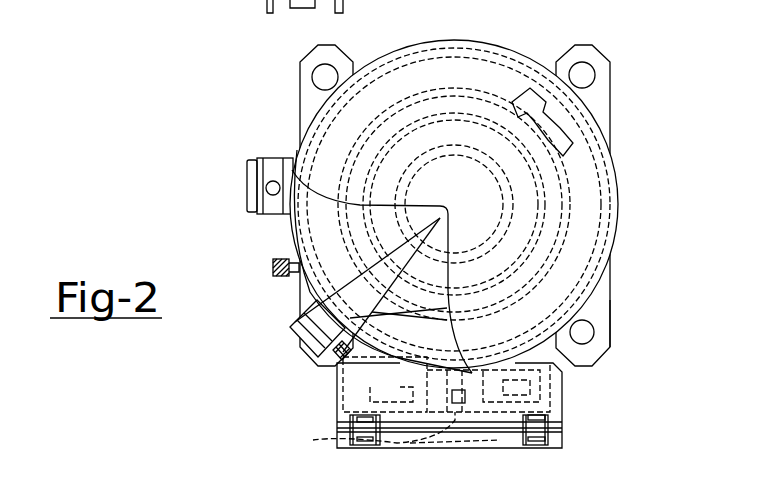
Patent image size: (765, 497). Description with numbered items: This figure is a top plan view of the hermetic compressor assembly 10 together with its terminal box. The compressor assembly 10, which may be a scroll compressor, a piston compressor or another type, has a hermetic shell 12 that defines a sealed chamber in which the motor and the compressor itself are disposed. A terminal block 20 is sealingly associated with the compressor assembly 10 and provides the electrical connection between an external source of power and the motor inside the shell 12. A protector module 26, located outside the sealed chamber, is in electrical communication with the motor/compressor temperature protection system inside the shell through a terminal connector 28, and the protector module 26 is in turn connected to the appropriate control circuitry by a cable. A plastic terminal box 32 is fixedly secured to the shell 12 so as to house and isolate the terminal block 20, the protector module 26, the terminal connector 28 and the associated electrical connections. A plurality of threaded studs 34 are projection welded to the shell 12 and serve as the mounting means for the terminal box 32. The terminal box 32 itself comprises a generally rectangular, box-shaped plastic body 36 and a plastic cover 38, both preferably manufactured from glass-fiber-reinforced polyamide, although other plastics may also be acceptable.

The hermetic compressor assembly 10 is at (216, 104).
The hermetic shell 12 is at (450, 41).
The terminal block 20 is at (608, 357).
The protector module 26 is at (345, 378).
The terminal connector 28 is at (288, 339).
The terminal box 32 is at (288, 418).
The threaded studs 34 is at (350, 438).
The plastic body 36 is at (560, 383).
The plastic cover 38 is at (500, 441).